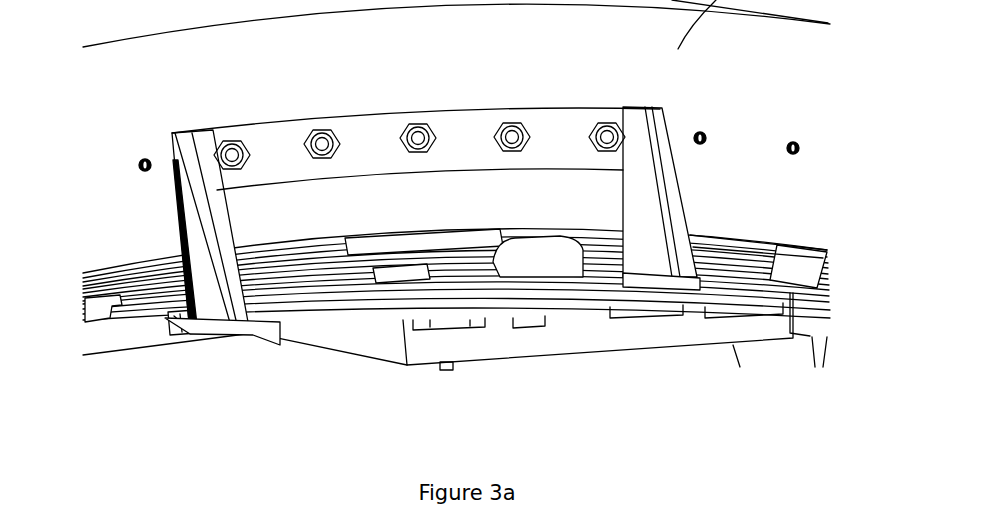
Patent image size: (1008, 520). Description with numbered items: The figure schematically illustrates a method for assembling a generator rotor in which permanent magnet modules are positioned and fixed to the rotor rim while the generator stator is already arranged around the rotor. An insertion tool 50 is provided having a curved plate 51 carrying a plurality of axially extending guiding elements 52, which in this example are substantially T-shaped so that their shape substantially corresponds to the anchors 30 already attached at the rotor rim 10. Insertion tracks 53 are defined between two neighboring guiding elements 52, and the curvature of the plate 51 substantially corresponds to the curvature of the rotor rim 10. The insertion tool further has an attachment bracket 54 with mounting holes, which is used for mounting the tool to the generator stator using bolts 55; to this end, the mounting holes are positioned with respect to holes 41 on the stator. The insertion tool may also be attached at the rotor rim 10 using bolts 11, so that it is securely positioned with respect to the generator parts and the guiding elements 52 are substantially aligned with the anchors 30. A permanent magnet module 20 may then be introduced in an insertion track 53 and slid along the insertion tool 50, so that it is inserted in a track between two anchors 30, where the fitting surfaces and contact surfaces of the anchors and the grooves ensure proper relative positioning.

The rotor rim 10 is at (102, 342).
The bolts 11 is at (172, 340).
The permanent magnet module 20 is at (612, 290).
The anchors 30 is at (82, 302).
The holes 41 is at (798, 145).
The insertion tool 50 is at (275, 386).
The curved plate 51 is at (432, 348).
The guiding elements 52 is at (503, 316).
The insertion tracks 53 is at (557, 320).
The attachment bracket 54 is at (472, 125).
The bolts 55 is at (323, 130).